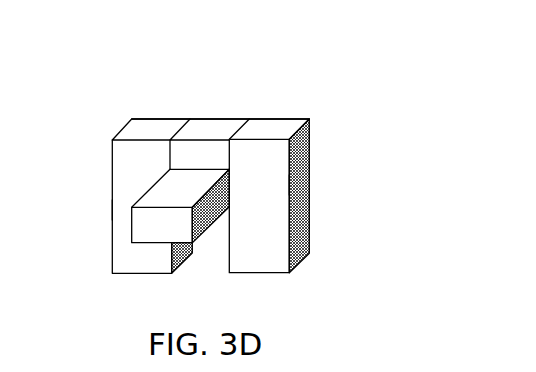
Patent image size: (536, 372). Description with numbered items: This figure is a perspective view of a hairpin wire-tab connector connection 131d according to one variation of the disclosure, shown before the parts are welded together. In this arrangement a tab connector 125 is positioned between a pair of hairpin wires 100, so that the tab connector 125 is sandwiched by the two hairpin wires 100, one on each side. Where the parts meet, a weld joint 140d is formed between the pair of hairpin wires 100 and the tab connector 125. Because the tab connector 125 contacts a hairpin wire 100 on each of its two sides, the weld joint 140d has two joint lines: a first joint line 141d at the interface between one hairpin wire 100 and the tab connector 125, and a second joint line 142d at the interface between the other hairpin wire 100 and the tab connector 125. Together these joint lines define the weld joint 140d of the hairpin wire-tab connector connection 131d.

The hairpin wire 100 is at (110, 208).
The tab connector 125 is at (216, 117).
The hairpin wire-tab connector connection 131d is at (93, 82).
The weld joint 140d is at (295, 50).
The first joint line 141d is at (187, 119).
The second joint line 142d is at (237, 129).